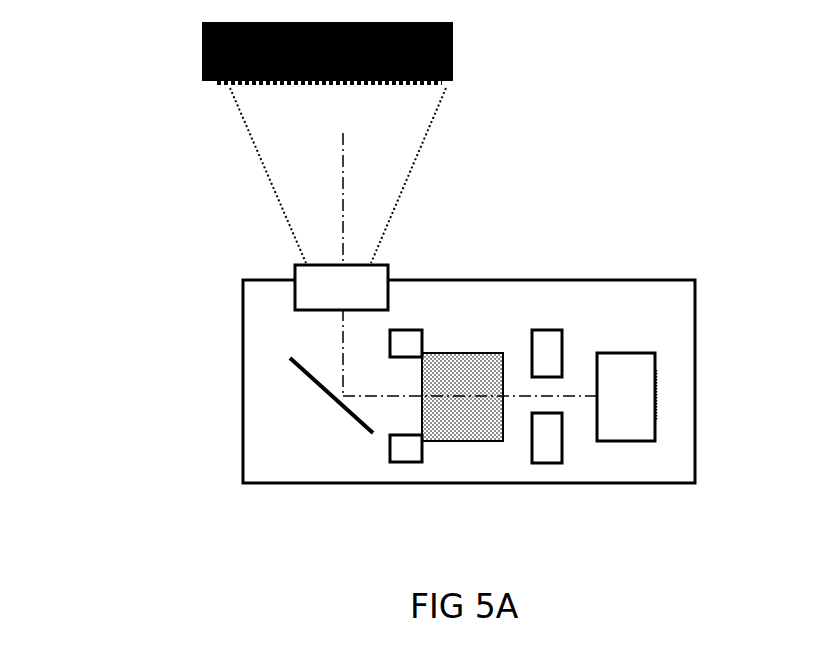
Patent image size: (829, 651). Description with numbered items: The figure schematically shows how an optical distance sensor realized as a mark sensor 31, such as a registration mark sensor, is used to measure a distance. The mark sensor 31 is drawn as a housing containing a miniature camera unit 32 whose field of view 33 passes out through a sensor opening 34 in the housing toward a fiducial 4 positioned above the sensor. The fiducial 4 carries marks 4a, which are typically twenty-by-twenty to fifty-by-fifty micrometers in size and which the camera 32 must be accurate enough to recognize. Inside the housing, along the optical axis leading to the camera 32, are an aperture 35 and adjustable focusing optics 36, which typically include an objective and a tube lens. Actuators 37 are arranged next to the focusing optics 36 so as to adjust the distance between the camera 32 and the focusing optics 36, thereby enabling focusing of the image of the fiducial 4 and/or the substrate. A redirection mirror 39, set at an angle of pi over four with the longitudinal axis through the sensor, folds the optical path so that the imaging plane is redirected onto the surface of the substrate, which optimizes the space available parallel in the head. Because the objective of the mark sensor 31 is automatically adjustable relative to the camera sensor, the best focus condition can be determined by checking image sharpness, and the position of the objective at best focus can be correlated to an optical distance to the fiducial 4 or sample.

The fiducial 4 is at (487, 60).
The marks 4a is at (218, 89).
The mark sensor 31 is at (127, 219).
The miniature camera unit 32 is at (627, 397).
The field of view 33 is at (413, 242).
The sensor opening 34 is at (289, 268).
The aperture 35 is at (558, 327).
The adjustable focusing optics 36 is at (469, 350).
The actuators 37 is at (418, 323).
The redirection mirror 39 is at (331, 395).